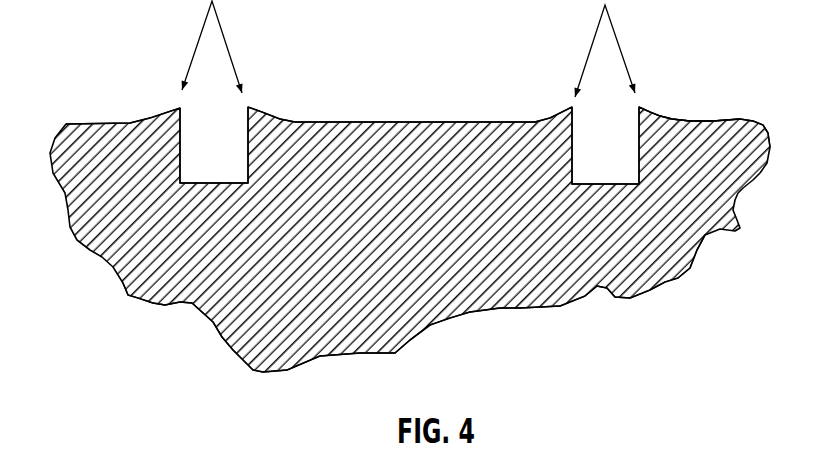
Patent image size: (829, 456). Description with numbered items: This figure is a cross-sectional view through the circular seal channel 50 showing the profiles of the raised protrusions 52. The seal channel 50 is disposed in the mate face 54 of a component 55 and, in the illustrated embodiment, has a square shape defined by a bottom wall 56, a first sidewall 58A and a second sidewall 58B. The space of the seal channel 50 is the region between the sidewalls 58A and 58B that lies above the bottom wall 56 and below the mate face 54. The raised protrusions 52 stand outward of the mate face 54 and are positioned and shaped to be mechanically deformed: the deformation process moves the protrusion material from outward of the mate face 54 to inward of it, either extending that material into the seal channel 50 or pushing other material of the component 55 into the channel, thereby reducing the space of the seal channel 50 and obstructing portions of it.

The seal channel 50 is at (238, 188).
The raised protrusions 52 is at (197, 47).
The mate face 54 is at (722, 118).
The component 55 is at (648, 288).
The bottom wall 56 is at (198, 185).
The first sidewall 58A is at (180, 153).
The second sidewall 58B is at (571, 152).